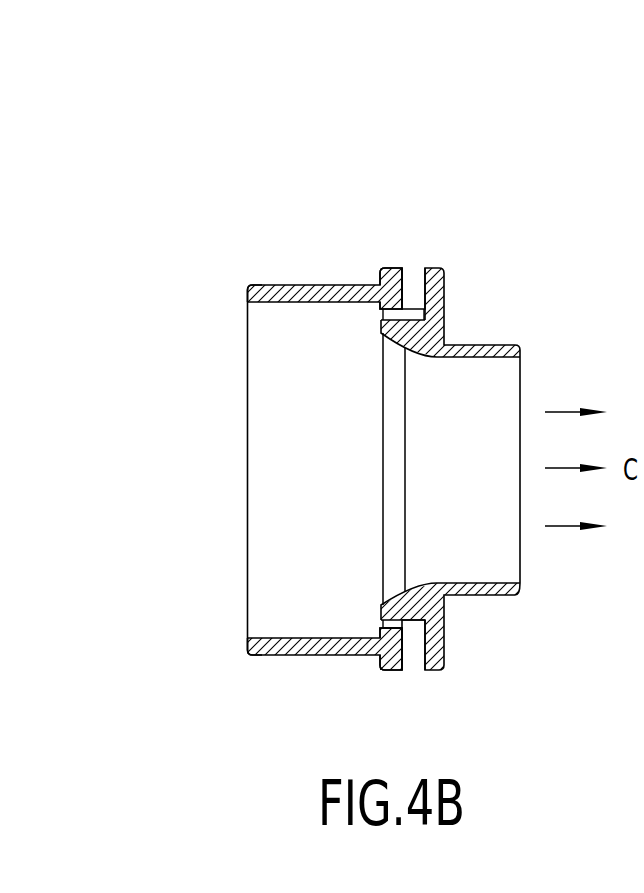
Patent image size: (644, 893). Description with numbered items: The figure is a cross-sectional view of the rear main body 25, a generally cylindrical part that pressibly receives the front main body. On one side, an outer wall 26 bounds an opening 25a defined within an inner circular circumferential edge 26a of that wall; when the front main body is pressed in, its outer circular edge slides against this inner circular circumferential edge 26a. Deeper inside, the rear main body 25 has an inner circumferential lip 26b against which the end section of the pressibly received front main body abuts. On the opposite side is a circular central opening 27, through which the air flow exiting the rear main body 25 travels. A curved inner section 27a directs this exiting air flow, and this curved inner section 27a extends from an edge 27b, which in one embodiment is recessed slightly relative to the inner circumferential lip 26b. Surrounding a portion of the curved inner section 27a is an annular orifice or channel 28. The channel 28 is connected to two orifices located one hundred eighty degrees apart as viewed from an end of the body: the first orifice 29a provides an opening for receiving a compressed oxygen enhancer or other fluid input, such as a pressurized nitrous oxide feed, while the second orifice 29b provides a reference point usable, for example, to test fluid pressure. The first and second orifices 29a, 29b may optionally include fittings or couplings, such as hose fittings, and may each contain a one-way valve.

The rear main body 25 is at (507, 213).
The opening 25a is at (265, 473).
The outer wall 26 is at (292, 287).
The inner circular circumferential edge 26a is at (255, 314).
The inner circumferential lip 26b is at (380, 300).
The circular central opening 27 is at (492, 568).
The curved inner section 27a is at (430, 352).
The edge 27b is at (380, 330).
The annular orifice or channel 28 is at (402, 316).
The first orifice 29a is at (415, 278).
The second orifice 29b is at (417, 658).